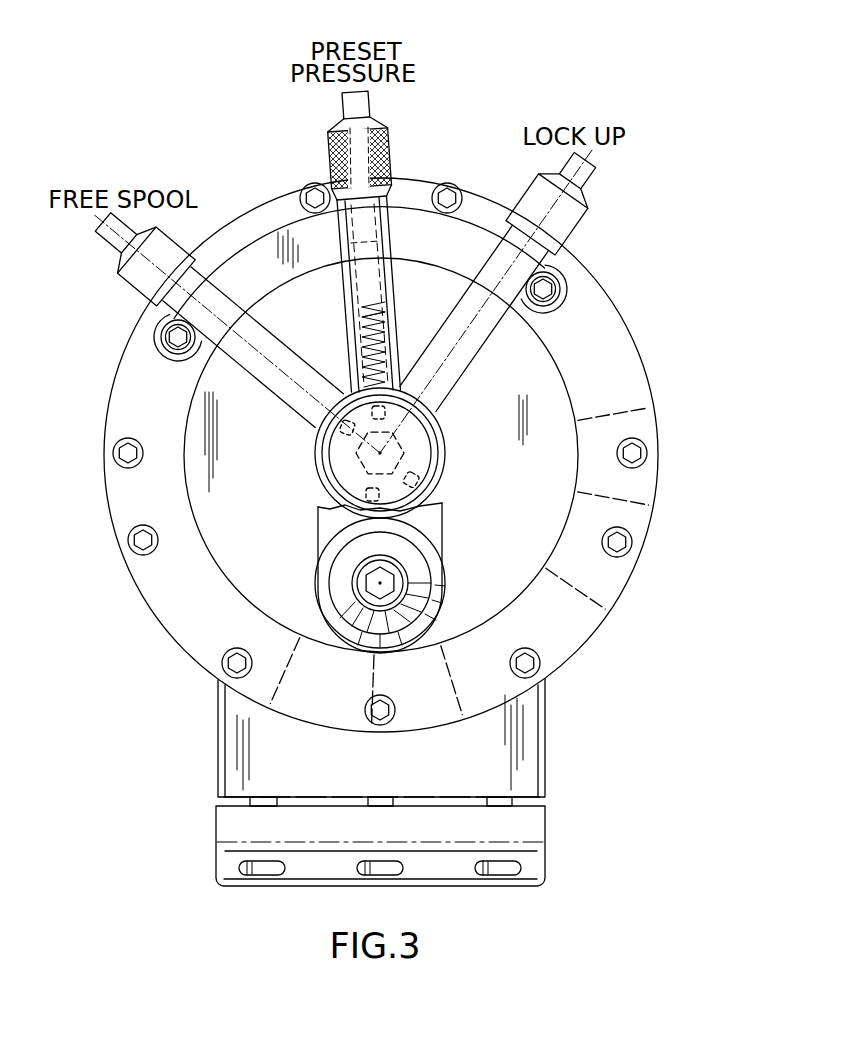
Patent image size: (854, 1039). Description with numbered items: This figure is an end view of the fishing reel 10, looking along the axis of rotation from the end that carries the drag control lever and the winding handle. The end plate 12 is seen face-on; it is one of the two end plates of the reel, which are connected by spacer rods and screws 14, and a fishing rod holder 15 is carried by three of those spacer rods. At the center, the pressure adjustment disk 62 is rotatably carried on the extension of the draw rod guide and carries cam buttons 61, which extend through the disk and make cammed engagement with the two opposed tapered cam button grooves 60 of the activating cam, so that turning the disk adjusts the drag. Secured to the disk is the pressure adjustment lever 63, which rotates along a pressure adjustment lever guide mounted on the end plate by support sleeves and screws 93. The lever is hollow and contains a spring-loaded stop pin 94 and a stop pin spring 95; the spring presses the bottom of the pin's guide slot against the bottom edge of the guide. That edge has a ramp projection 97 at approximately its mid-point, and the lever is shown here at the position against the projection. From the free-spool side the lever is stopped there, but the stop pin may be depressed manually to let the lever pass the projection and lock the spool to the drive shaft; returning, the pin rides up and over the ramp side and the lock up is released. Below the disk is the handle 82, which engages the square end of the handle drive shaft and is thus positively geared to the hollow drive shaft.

The fishing reel 10 is at (516, 68).
The end plate 12 is at (632, 402).
The screws 14 is at (124, 453).
The fishing rod holder 15 is at (230, 748).
The cam button grooves 60 is at (352, 424).
The cam buttons 61 is at (380, 490).
The pressure adjustment disk 62 is at (445, 440).
The pressure adjustment lever 63 is at (396, 345).
The handle 82 is at (442, 538).
The screws 93 is at (176, 337).
The stop pin 94 is at (372, 101).
The stop pin spring 95 is at (362, 346).
The ramp projection 97 is at (385, 262).